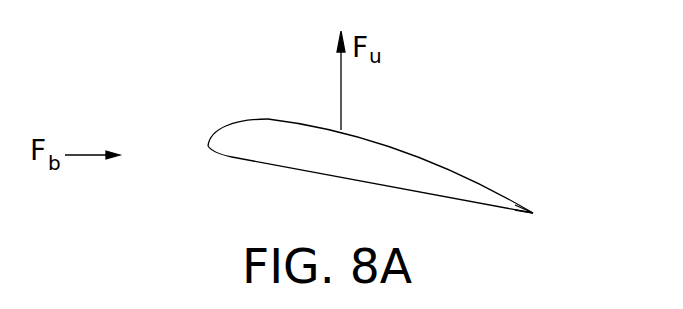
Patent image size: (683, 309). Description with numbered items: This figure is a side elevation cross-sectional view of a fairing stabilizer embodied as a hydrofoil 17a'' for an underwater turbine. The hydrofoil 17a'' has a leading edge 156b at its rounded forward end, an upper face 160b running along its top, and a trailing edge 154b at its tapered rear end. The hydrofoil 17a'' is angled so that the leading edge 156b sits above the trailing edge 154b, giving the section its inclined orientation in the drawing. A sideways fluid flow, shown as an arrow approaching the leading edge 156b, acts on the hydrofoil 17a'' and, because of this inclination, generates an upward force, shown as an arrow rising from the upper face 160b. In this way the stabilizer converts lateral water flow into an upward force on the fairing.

The hydrofoil 17a'' is at (379, 168).
The leading edge 156b is at (218, 131).
The upper face 160b is at (363, 134).
The trailing edge 154b is at (536, 214).